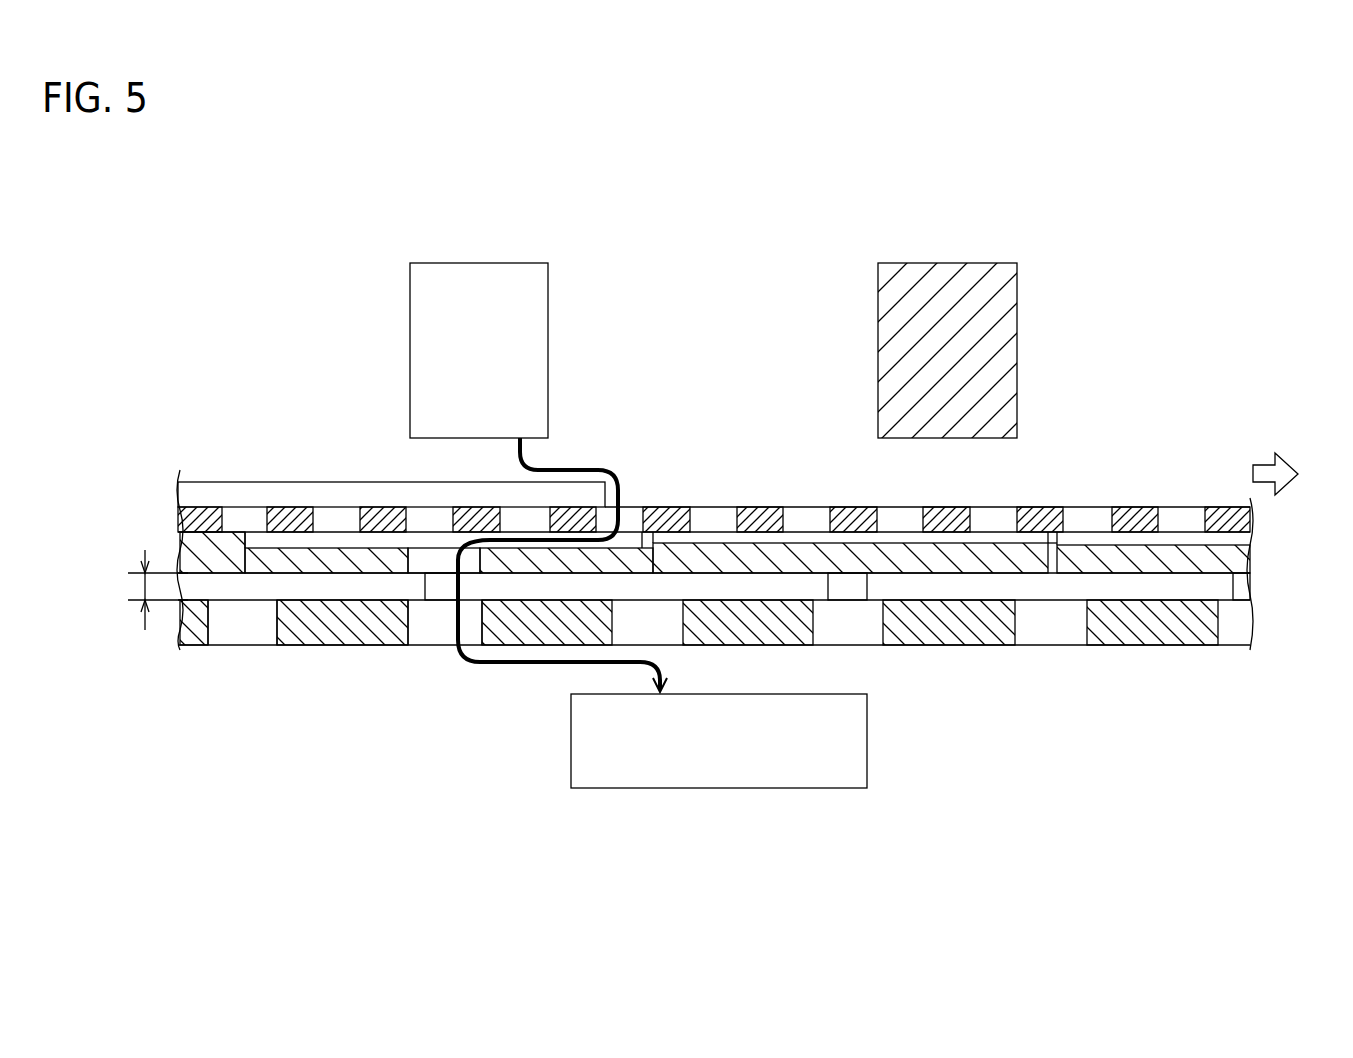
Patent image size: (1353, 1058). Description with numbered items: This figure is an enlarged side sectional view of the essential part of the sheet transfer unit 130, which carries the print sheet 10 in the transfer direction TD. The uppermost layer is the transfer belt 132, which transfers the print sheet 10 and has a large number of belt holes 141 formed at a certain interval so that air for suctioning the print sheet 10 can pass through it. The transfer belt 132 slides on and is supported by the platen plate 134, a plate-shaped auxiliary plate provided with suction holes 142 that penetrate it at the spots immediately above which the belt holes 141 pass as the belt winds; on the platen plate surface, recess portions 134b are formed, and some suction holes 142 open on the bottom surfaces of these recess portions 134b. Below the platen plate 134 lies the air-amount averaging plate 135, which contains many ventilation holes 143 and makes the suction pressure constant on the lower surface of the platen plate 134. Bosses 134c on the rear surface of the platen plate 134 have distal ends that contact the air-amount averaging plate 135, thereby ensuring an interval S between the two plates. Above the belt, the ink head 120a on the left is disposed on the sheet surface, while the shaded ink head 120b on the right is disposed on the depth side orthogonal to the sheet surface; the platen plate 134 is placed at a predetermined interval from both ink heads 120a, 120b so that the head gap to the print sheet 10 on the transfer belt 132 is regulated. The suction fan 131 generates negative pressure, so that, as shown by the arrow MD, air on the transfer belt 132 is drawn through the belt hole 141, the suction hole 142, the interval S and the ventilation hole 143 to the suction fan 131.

The print sheet 10 is at (248, 490).
The ink head 120a is at (440, 263).
The ink head 120b is at (925, 263).
The sheet transfer unit 130 is at (183, 428).
The suction fan 131 is at (868, 742).
The transfer belt 132 is at (180, 520).
The platen plate 134 is at (662, 485).
The recess portions 134b is at (262, 535).
The bosses 134c is at (443, 590).
The air-amount averaging plate 135 is at (185, 635).
The belt holes 141 is at (628, 507).
The suction holes 142 is at (410, 565).
The ventilation holes 143 is at (210, 625).
The interval S is at (138, 590).
The arrow indicating air suction path MD is at (577, 470).
The transfer direction TD is at (1275, 457).